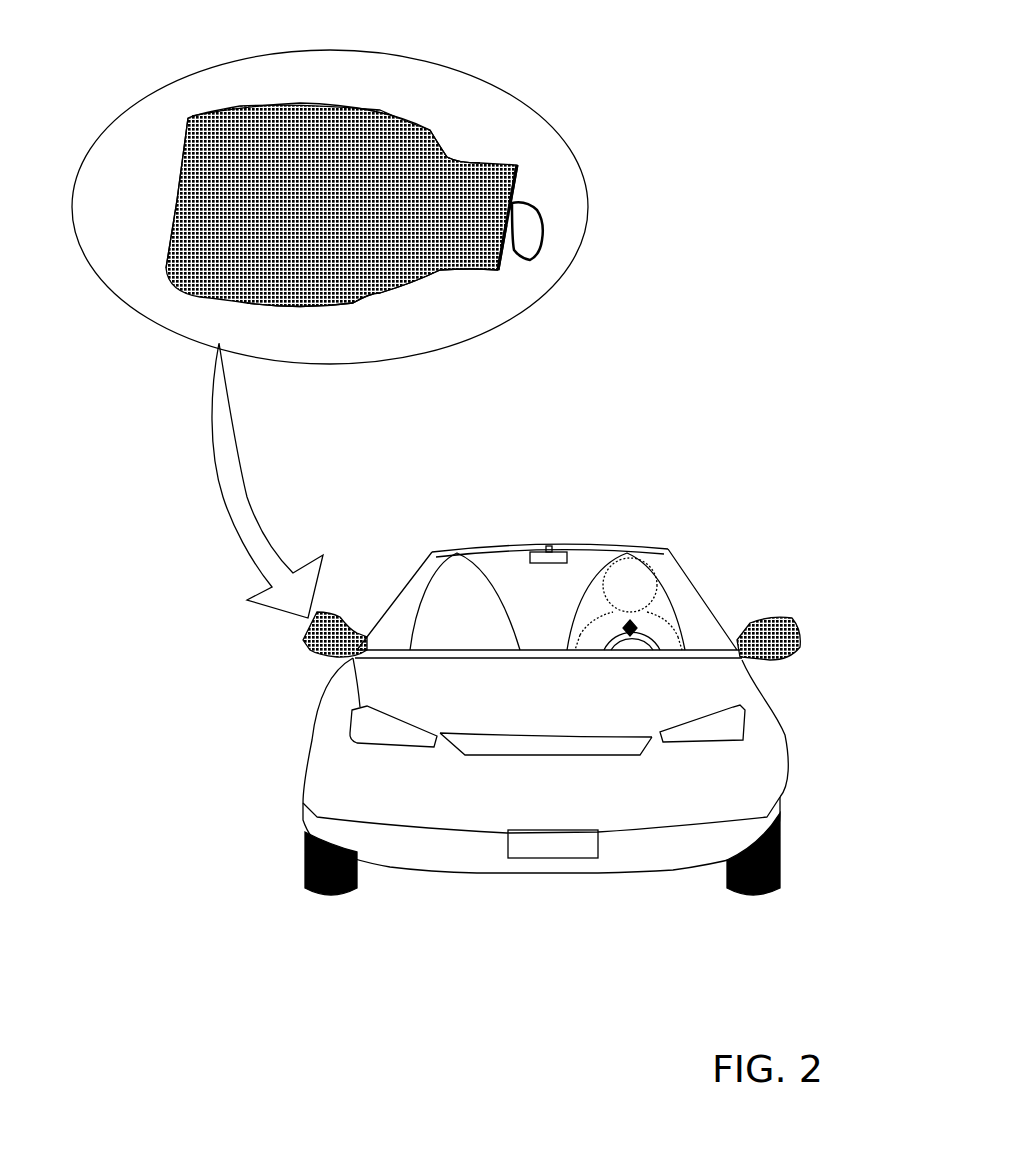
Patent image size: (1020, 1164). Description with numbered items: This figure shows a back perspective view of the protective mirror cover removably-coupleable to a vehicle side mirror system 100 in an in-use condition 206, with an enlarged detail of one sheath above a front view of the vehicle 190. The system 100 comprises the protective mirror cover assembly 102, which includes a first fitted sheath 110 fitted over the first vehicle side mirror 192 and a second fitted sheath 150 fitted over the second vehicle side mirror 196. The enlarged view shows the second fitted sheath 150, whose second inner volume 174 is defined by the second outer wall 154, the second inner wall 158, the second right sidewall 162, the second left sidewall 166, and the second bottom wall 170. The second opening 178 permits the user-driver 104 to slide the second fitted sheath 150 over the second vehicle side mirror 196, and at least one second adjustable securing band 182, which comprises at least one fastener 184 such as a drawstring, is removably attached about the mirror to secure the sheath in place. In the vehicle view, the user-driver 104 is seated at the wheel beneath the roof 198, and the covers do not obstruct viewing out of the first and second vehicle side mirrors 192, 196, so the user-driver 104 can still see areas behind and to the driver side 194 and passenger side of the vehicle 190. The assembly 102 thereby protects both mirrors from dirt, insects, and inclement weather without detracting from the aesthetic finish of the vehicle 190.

The protective mirror cover removably-coupleable to a vehicle side mirror system 100 is at (681, 61).
The protective mirror cover assembly 102 is at (694, 102).
The in-use condition 206 is at (704, 146).
The second fitted sheath 150 is at (432, 126).
The second outer wall 154 is at (377, 108).
The second right sidewall 162 is at (184, 138).
The second left sidewall 166 is at (481, 160).
The second opening 178 is at (521, 155).
The second inner wall 158 is at (500, 190).
The second adjustable securing band 182 is at (522, 189).
The fastener 184 is at (552, 242).
The second bottom wall 170 is at (499, 279).
The second inner volume 174 is at (407, 257).
The roof 198 is at (453, 550).
The driver side 194 is at (604, 556).
The user-driver 104 is at (642, 556).
The first fitted sheath 110 is at (774, 612).
The first vehicle side mirror 192 is at (784, 664).
The second vehicle side mirror 196 is at (313, 660).
The vehicle 190 is at (477, 877).